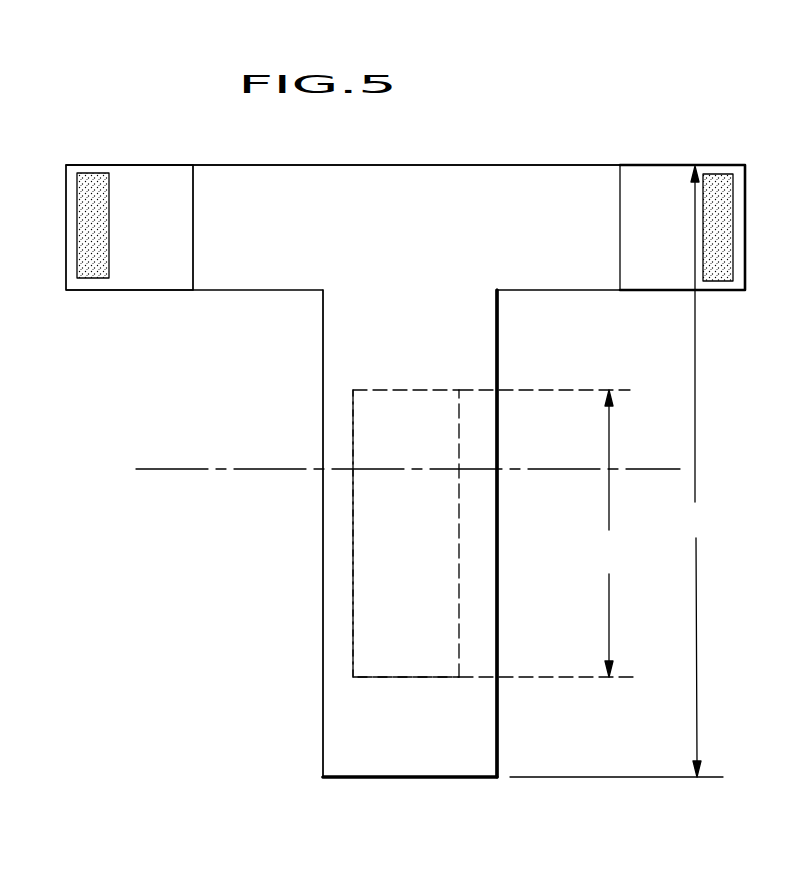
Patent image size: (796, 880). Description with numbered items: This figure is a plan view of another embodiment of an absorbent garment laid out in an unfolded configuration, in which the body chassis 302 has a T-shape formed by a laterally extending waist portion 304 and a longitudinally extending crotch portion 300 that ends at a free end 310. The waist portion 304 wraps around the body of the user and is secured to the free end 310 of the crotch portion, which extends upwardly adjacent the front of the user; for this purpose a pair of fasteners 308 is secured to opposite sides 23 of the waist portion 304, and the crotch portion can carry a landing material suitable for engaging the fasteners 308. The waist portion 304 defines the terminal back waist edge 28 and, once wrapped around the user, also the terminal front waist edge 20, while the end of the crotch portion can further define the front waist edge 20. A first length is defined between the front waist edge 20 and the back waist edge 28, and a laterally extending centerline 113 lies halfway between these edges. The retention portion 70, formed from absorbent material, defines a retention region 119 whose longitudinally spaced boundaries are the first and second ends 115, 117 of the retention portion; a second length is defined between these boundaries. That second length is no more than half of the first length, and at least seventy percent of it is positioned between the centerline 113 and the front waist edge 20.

The terminal front waist edge 20 is at (437, 777).
The end portions 23 is at (131, 165).
The terminal back waist edge 28 is at (512, 183).
The retention portion 70 is at (353, 577).
The laterally extending centerline 113 is at (178, 468).
The first end of the retention portion 115 is at (398, 677).
The second end of the retention portion 117 is at (388, 392).
The retention region 119 is at (628, 451).
The stem portion 300 is at (322, 675).
The body chassis 302 is at (352, 200).
The waist portion 304 is at (240, 190).
The fasteners 308 is at (95, 262).
The free end of the crotch portion 310 is at (355, 738).